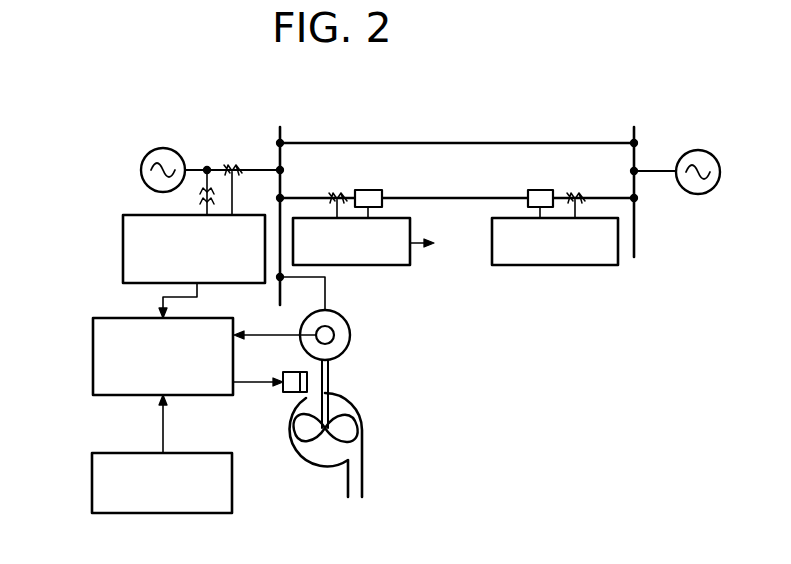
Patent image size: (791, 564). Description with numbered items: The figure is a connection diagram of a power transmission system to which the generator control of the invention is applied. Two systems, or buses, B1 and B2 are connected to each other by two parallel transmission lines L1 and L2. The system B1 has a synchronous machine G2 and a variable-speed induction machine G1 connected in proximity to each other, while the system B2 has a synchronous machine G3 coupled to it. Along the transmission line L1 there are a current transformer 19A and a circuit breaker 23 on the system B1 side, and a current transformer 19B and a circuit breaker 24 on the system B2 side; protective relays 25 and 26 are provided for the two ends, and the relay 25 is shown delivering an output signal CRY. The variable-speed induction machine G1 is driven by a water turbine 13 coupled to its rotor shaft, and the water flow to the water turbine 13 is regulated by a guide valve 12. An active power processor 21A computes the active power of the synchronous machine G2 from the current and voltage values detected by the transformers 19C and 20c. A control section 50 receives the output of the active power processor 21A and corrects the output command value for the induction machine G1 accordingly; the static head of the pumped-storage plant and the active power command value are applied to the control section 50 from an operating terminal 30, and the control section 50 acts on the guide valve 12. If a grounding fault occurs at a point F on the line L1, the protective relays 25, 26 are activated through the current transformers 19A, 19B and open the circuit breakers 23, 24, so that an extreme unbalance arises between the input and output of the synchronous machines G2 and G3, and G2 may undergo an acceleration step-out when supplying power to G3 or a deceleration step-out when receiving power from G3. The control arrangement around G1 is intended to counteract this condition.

The guide valve 12 is at (283, 391).
The water turbine 13 is at (360, 432).
The current transformer 19A is at (333, 190).
The current transformer 19B is at (574, 190).
The current transformer 19C is at (233, 160).
The voltage transformer 20c is at (196, 201).
The active power processor 21A is at (123, 245).
The circuit breaker 23 is at (368, 189).
The circuit breaker 24 is at (540, 189).
The protective relay 25 is at (383, 266).
The protective relay 26 is at (585, 266).
The operating terminal 30 is at (92, 480).
The control section 50 is at (93, 354).
The variable-speed induction machine G1 is at (352, 327).
The synchronous machine G2 is at (163, 148).
The synchronous machine G3 is at (705, 150).
The system (bus) B1 is at (285, 199).
The system (bus) B2 is at (639, 176).
The transmission line L1 is at (446, 180).
The transmission line L2 is at (440, 142).
The fault point F is at (390, 210).
The relay output signal CRY is at (442, 243).